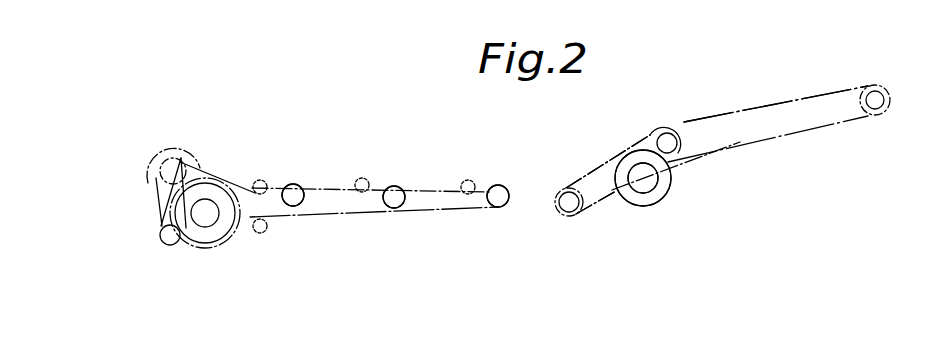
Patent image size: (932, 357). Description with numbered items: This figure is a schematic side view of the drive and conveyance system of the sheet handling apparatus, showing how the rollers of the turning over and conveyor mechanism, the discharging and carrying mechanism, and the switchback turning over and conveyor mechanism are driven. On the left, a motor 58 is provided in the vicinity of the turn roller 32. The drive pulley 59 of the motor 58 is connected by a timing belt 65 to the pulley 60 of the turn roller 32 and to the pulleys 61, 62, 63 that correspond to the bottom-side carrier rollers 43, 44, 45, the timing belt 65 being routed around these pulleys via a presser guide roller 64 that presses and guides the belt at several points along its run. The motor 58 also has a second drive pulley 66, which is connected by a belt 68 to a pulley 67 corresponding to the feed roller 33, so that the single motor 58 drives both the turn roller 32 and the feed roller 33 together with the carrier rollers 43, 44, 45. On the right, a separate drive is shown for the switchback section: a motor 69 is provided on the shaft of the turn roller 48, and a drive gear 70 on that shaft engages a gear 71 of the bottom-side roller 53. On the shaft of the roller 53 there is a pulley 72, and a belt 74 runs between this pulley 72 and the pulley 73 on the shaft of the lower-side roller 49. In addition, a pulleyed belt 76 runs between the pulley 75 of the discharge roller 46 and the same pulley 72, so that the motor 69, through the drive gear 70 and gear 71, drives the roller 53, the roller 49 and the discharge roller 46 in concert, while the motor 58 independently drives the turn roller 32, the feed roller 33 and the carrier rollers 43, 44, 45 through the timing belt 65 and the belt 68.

The turn roller 32 is at (218, 232).
The feed roller 33 is at (169, 246).
The carrier roller 43 is at (296, 186).
The carrier roller 44 is at (396, 188).
The carrier roller 45 is at (500, 186).
The discharge roller 46 is at (879, 109).
The turn roller 48 is at (638, 205).
The roller 49 is at (565, 213).
The roller 53 is at (681, 132).
The motor 58 is at (171, 146).
The drive pulley 59 is at (187, 167).
The pulley 60 is at (258, 234).
The pulley 61 is at (311, 163).
The pulley 62 is at (407, 163).
The pulley 63 is at (508, 162).
The presser guide roller 64 is at (258, 180).
The timing belt 65 is at (383, 212).
The drive pulley 66 is at (152, 186).
The pulley 67 is at (162, 233).
The belt 68 is at (157, 208).
The motor 69 is at (655, 188).
The drive gear 70 is at (672, 180).
The gear 71 is at (665, 132).
The pulley 72 is at (645, 133).
The pulley 73 is at (600, 213).
The belt 74 is at (586, 170).
The pulley 75 is at (866, 91).
The pulleyed belt 76 is at (762, 106).